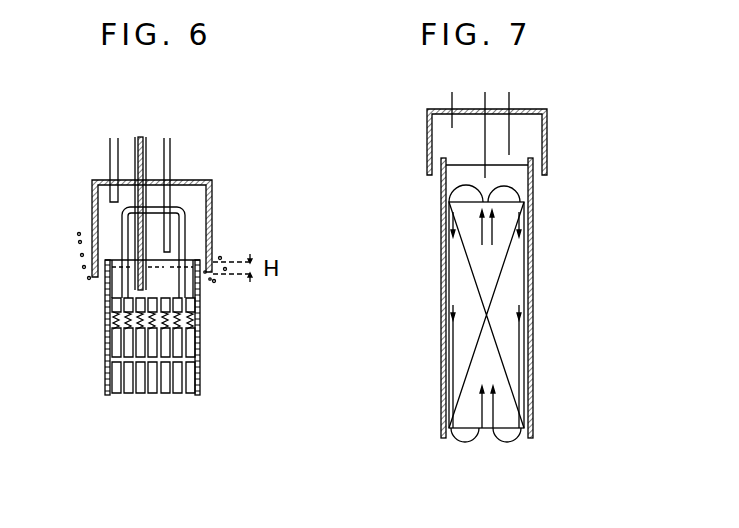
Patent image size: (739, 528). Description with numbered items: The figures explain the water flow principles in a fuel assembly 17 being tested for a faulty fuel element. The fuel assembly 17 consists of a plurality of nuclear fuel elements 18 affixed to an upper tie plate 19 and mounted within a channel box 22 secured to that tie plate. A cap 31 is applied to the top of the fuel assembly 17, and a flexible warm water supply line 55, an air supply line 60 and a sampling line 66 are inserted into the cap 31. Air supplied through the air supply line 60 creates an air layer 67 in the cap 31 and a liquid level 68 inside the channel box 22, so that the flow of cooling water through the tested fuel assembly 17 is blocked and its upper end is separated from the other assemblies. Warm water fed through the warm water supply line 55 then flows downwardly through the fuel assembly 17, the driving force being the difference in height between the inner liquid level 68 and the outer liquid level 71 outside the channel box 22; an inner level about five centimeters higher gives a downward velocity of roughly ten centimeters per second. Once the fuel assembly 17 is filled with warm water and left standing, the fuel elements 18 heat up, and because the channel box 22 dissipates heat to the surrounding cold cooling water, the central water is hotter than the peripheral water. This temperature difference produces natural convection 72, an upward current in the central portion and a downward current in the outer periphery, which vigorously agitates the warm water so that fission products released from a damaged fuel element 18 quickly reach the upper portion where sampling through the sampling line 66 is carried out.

In FIG. 6, the fuel assembly 17 is at (241, 360).
In FIG. 7, the fuel assembly 17 is at (576, 340).
In FIG. 6, the nuclear fuel element 18 is at (112, 375).
In FIG. 7, the nuclear fuel element 18 is at (452, 345).
In FIG. 6, the upper tie plate 19 is at (112, 310).
In FIG. 6, the channel box 22 is at (200, 383).
In FIG. 7, the channel box 22 is at (441, 262).
In FIG. 6, the cap 31 is at (92, 200).
In FIG. 7, the cap 31 is at (547, 145).
In FIG. 6, the warm water supply line 55 is at (170, 160).
In FIG. 7, the warm water supply line 55 is at (510, 100).
In FIG. 6, the air supply line 60 is at (110, 153).
In FIG. 7, the air supply line 60 is at (452, 100).
In FIG. 6, the sampling line 66 is at (146, 150).
In FIG. 7, the sampling line 66 is at (487, 100).
In FIG. 6, the air layer 67 is at (200, 212).
In FIG. 6, the liquid level 68 is at (160, 265).
In FIG. 6, the liquid level 71 is at (103, 280).
In FIG. 7, the natural convection 72 is at (493, 415).